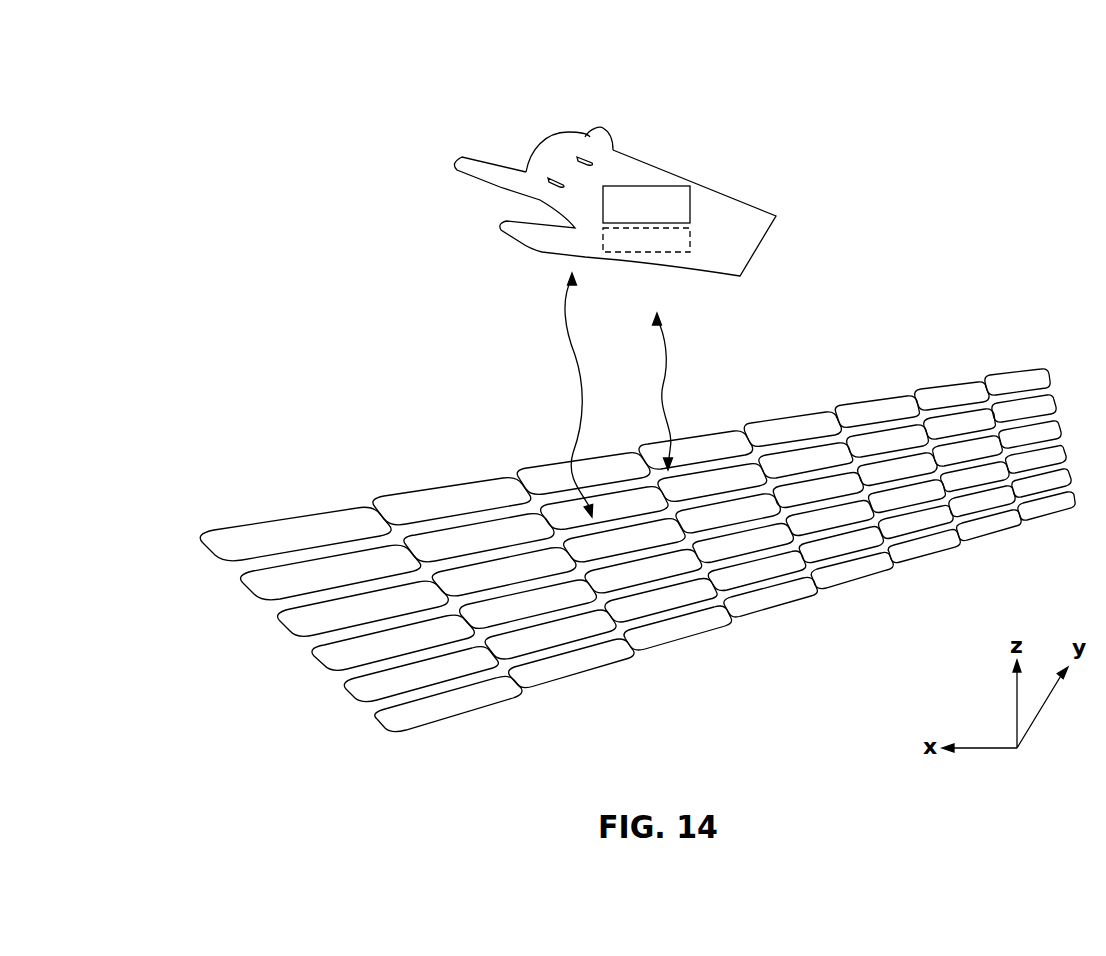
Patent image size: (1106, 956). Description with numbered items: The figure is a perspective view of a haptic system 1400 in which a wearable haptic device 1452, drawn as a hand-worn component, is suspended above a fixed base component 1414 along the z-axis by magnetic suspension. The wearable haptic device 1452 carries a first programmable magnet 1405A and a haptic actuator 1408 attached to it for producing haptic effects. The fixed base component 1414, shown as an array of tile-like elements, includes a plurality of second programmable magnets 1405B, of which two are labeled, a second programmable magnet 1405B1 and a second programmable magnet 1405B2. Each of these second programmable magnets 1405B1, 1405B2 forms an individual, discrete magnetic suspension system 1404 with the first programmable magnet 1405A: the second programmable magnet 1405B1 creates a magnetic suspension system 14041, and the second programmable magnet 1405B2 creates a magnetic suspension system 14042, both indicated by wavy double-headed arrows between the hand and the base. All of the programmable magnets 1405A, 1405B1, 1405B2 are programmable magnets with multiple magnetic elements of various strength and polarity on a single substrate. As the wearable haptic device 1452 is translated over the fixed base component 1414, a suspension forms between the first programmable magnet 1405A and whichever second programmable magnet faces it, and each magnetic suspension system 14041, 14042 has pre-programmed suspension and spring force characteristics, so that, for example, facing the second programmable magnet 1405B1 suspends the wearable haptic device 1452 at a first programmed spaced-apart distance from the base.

The haptic system 1400 is at (367, 202).
The haptic device 1452 is at (613, 150).
The haptic actuator 1408 is at (646, 204).
The first programmable magnet 1405A is at (690, 245).
The magnetic suspension system 1404 is at (610, 354).
The magnetic suspension system 14041 is at (495, 342).
The magnetic suspension system 14042 is at (692, 367).
The second programmable magnets 1405B is at (627, 445).
The second programmable magnet 1405B1 is at (563, 510).
The second programmable magnet 1405B2 is at (703, 487).
The fixed base component 1414 is at (945, 373).